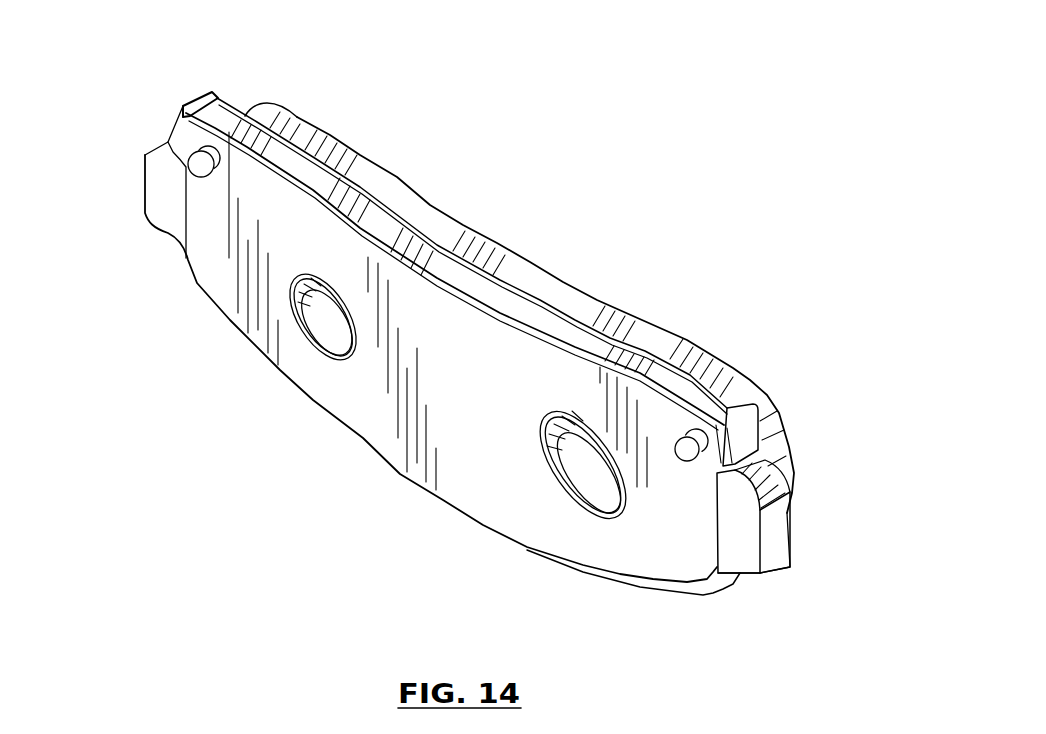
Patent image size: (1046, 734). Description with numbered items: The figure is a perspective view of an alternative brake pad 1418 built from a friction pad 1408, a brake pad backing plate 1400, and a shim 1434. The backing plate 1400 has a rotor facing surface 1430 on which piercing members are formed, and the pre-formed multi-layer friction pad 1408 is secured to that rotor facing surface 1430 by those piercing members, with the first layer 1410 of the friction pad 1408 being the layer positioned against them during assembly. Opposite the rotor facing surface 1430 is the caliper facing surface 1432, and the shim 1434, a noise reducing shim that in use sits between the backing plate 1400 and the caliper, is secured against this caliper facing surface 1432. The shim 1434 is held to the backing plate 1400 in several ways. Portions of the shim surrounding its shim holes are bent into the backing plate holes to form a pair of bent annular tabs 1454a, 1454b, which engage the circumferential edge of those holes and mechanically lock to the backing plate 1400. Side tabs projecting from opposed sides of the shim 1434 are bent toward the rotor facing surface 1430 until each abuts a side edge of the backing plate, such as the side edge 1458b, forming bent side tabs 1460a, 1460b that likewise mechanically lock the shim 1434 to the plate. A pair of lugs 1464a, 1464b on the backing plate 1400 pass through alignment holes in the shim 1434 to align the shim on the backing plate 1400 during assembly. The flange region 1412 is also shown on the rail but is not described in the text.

The brake pad backing plate 1400 is at (522, 316).
The friction pad 1408 is at (697, 341).
The first layer 1410 is at (408, 227).
The rail flange 1412 is at (383, 183).
The brake pad 1418 is at (843, 297).
The rotor facing surface 1430 is at (232, 108).
The caliper facing surface 1432 is at (723, 527).
The shim 1434 is at (663, 537).
The bent annular tab 1454a is at (298, 325).
The bent annular tab 1454b is at (550, 478).
The side edge 1458b is at (768, 479).
The bent side tab 1460a is at (187, 102).
The bent side tab 1460b is at (748, 440).
The lug 1464a is at (168, 142).
The lug 1464b is at (673, 458).